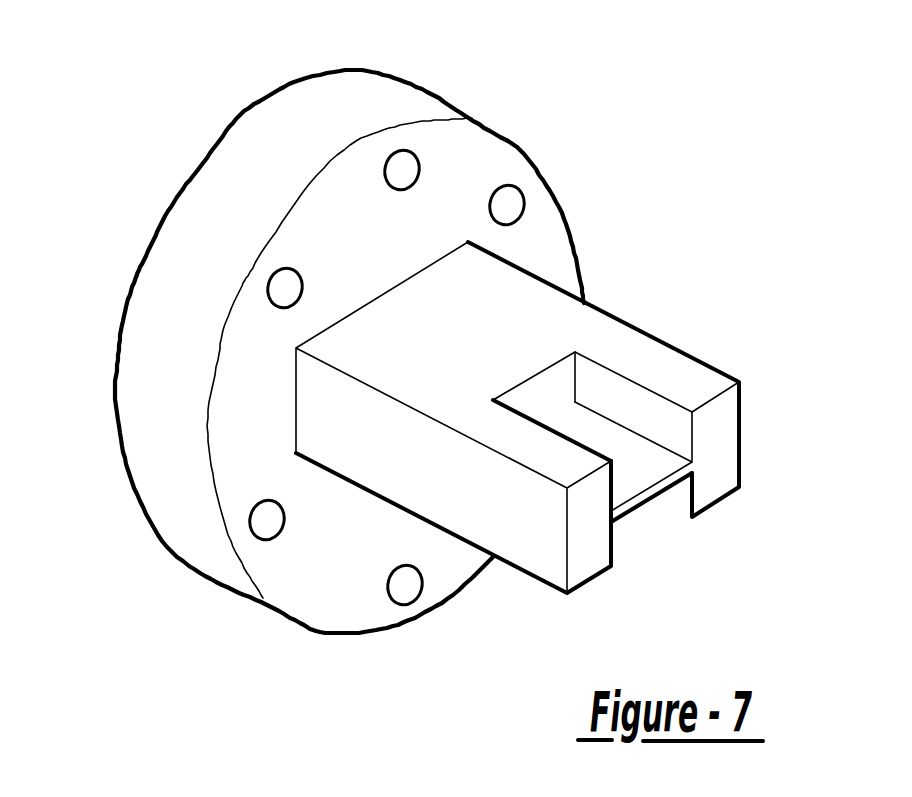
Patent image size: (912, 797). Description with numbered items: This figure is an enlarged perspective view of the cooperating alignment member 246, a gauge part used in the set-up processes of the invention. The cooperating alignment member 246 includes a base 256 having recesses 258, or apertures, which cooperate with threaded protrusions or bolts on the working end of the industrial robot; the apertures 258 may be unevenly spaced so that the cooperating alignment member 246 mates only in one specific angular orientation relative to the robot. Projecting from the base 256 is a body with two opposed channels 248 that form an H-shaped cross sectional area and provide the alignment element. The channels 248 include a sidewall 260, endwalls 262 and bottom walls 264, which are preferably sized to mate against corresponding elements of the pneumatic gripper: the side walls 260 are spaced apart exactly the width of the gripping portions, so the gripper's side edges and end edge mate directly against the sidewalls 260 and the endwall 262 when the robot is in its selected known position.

The cooperating alignment member 246 is at (543, 127).
The base 256 is at (160, 478).
The recesses 258 is at (277, 537).
The channels 248 is at (636, 450).
The endwalls 262 is at (547, 383).
The sidewall 260 is at (617, 388).
The bottom walls 264 is at (605, 443).